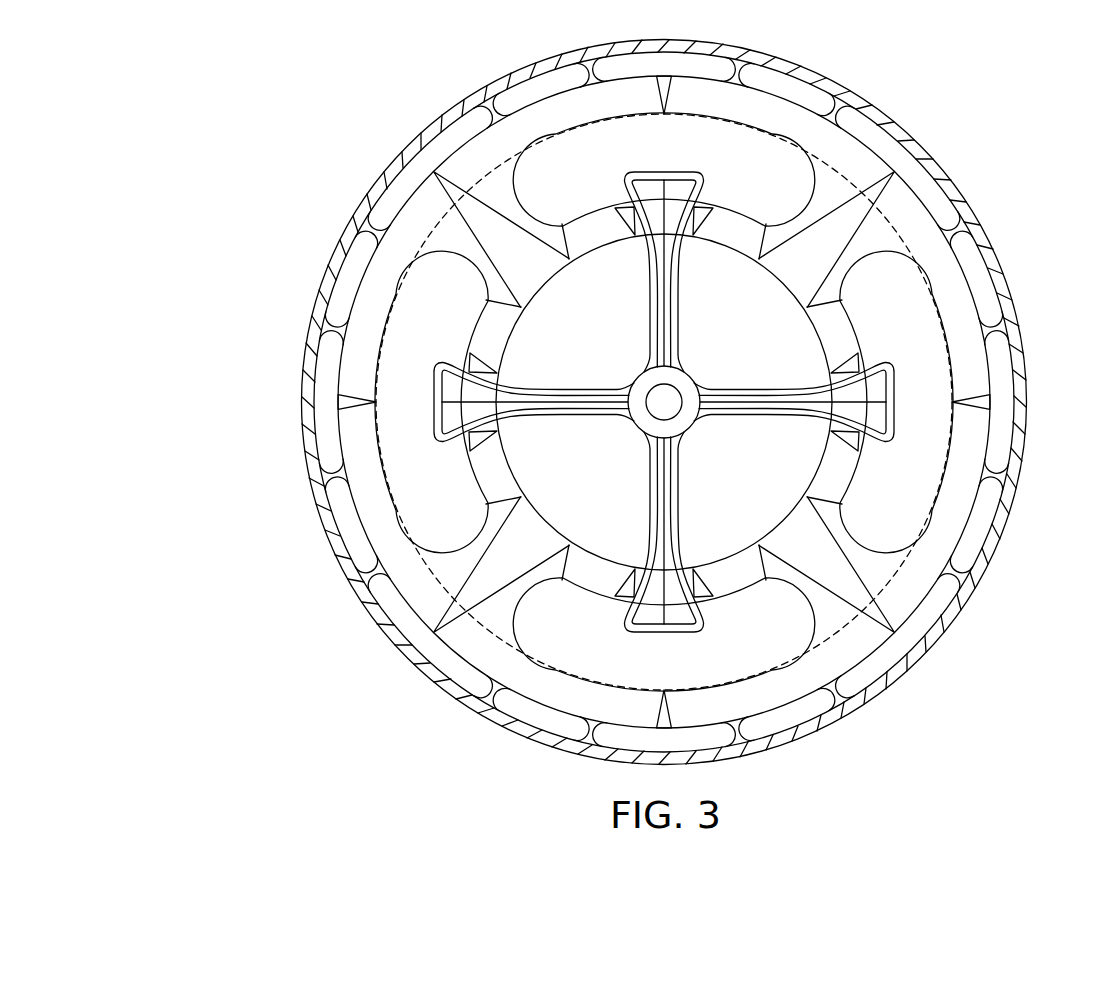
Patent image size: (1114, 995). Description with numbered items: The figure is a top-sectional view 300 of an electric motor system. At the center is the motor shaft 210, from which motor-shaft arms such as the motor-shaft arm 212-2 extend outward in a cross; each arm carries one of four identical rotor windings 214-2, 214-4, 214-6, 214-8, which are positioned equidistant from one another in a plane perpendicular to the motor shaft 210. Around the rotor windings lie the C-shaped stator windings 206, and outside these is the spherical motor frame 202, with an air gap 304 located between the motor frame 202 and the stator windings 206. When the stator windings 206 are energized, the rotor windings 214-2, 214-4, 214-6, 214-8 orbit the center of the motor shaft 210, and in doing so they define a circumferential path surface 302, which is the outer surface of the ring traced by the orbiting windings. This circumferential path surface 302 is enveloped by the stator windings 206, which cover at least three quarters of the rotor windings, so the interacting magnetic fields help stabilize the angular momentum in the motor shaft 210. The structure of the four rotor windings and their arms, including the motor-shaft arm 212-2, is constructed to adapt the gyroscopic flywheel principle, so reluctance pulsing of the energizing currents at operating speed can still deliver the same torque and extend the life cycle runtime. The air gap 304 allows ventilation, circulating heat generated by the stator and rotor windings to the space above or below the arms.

The top-sectional view 300 is at (265, 82).
The motor frame 202 is at (355, 207).
The air gap 304 is at (355, 268).
The circumferential path surface 302 is at (372, 352).
The stator windings 206 is at (432, 198).
The rotor winding 214-2 is at (393, 404).
The rotor winding 214-4 is at (603, 140).
The rotor winding 214-6 is at (920, 358).
The rotor winding 214-8 is at (713, 664).
The motor-shaft arm 212-2 is at (548, 418).
The motor shaft 210 is at (695, 377).